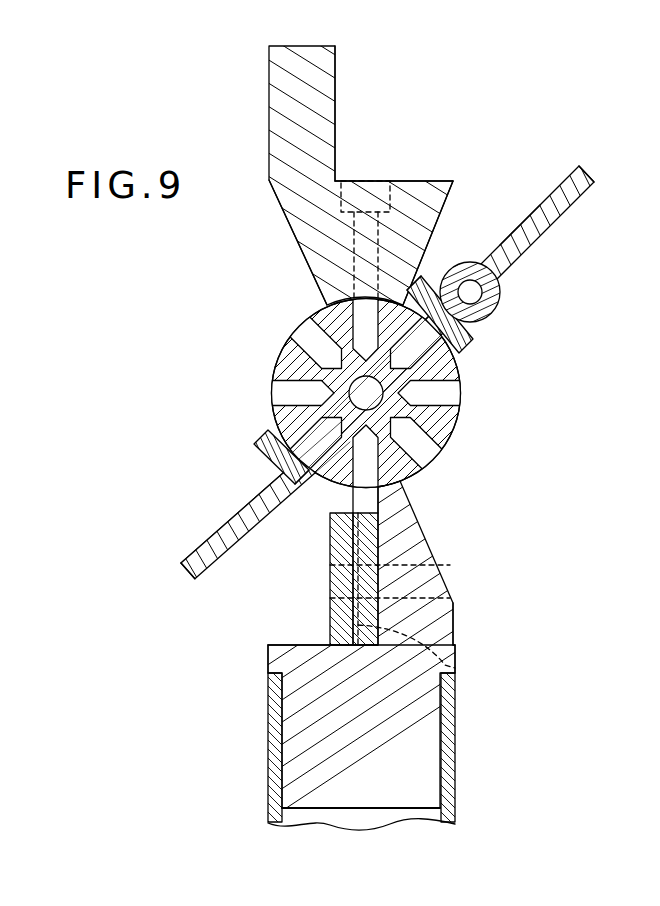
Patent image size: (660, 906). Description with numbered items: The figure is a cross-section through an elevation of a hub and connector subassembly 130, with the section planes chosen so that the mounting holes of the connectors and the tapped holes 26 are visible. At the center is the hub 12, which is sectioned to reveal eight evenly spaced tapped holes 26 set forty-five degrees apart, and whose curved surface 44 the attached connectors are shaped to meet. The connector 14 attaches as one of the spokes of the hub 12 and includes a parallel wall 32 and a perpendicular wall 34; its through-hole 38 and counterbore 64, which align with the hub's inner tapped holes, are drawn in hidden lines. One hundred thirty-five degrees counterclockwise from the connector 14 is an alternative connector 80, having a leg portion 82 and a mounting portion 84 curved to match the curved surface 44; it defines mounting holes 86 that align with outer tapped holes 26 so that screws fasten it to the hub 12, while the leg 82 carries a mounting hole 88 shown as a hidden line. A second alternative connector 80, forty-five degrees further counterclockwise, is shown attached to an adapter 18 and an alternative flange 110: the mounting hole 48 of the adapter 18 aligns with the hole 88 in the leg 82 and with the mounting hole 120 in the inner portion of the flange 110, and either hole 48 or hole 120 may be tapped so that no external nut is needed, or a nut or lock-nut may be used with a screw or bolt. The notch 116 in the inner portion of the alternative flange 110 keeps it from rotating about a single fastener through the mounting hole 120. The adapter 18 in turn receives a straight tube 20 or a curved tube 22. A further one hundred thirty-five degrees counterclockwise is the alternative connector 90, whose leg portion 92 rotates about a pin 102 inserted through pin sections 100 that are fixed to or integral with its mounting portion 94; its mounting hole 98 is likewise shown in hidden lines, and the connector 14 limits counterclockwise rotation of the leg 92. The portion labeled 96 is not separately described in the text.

The hub 12 is at (465, 436).
The connector 14 is at (266, 93).
The adapter 18 is at (440, 552).
The straight tube 20 is at (458, 745).
The curved tube 22 is at (361, 819).
The tapped holes 26 is at (300, 338).
The parallel wall 32 is at (336, 100).
The perpendicular wall 34 is at (438, 178).
The through-hole 38 is at (352, 240).
The curved surface 44 is at (364, 381).
The mounting hole 48 is at (455, 605).
The counterbore 64 is at (377, 203).
The alternative connector 80 is at (187, 573).
The leg portion 82 is at (200, 552).
The mounting portion 84 is at (262, 425).
The mounting holes 86 is at (276, 478).
The mounting hole 88 is at (238, 508).
The alternative connector 90 is at (590, 168).
The leg portion 92 is at (567, 200).
The mounting portion 94 is at (480, 348).
The arm portion 96 is at (420, 300).
The mounting hole 98 is at (515, 225).
The pin sections 100 is at (501, 293).
The pin 102 is at (469, 285).
The alternative flange 110 is at (328, 528).
The notch 116 is at (455, 668).
The mounting hole 120 is at (332, 595).
The subassembly 130 is at (474, 112).